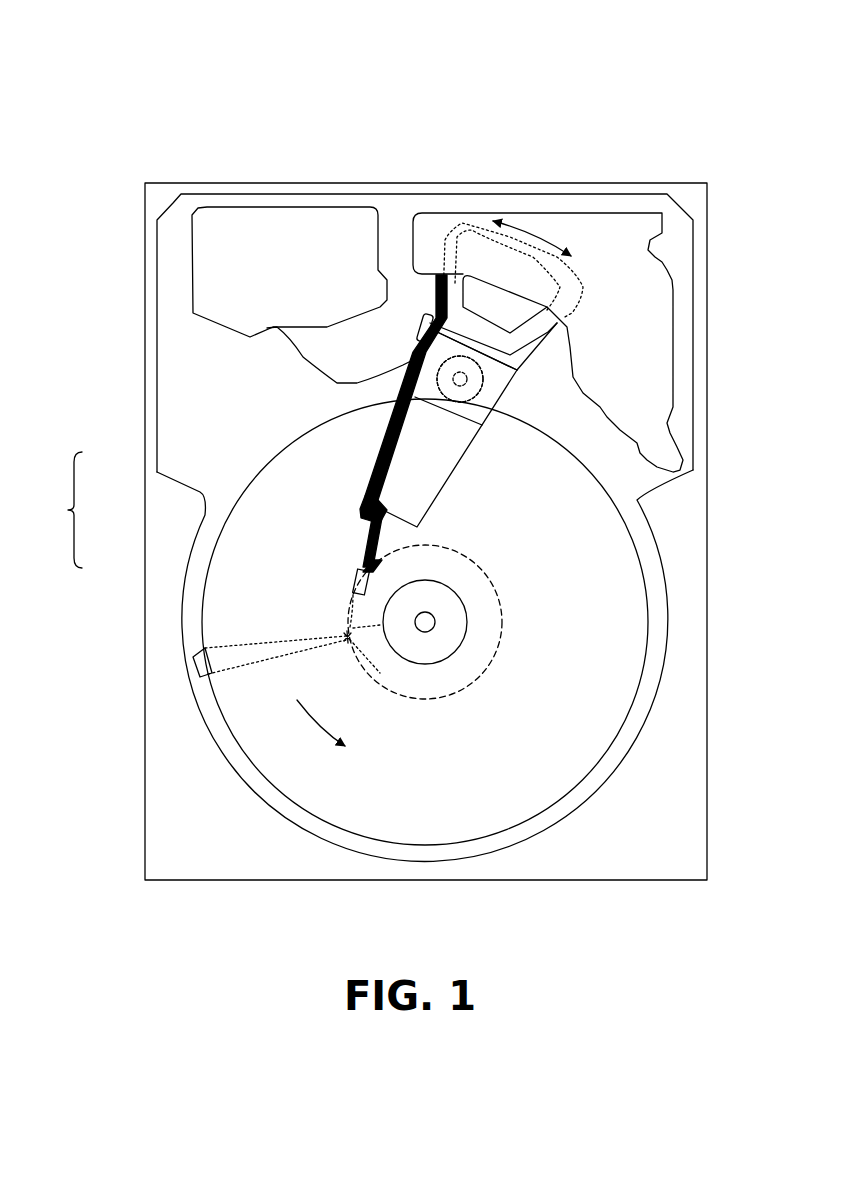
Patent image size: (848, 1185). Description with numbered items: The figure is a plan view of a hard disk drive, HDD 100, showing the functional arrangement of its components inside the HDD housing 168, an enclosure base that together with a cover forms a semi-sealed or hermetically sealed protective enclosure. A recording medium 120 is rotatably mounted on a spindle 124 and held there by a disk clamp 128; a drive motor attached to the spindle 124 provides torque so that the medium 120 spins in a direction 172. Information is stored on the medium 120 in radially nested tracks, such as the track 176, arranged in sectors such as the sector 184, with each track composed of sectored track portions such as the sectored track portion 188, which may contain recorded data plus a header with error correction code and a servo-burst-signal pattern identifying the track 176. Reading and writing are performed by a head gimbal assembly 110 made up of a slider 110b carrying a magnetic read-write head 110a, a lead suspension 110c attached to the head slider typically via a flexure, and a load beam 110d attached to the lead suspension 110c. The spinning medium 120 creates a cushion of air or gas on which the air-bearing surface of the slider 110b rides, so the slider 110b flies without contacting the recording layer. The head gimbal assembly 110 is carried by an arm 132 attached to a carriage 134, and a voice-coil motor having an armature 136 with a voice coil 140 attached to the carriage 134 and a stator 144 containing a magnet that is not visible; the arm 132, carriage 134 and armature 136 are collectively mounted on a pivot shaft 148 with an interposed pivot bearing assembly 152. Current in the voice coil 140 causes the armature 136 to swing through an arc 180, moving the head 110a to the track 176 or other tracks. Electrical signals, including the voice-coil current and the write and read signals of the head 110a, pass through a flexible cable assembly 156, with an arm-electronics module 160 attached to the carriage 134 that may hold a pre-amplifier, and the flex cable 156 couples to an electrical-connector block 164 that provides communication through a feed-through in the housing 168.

The hard disk drive 100 is at (81, 78).
The head gimbal assembly 110 is at (68, 510).
The magnetic read-write head 110a is at (353, 597).
The slider 110b is at (360, 575).
The lead suspension 110c is at (363, 537).
The load beam 110d is at (363, 515).
The recording medium 120 is at (585, 578).
The spindle 124 is at (436, 621).
The disk clamp 128 is at (449, 637).
The arm 132 is at (418, 480).
The carriage 134 is at (477, 407).
The armature 136 is at (443, 280).
The voice coil 140 is at (455, 283).
The stator 144 is at (643, 293).
The pivot shaft 148 is at (467, 379).
The pivot bearing assembly 152 is at (473, 392).
The flexible cable assembly 156 is at (300, 360).
The arm-electronics module 160 is at (417, 343).
The electrical-connector block 164 is at (215, 268).
The HDD housing 168 is at (690, 191).
The direction of medium rotation 172 is at (330, 726).
The track 176 is at (500, 588).
The arc 180 is at (530, 228).
The sector 184 is at (190, 663).
The sectored track portion 188 is at (340, 637).